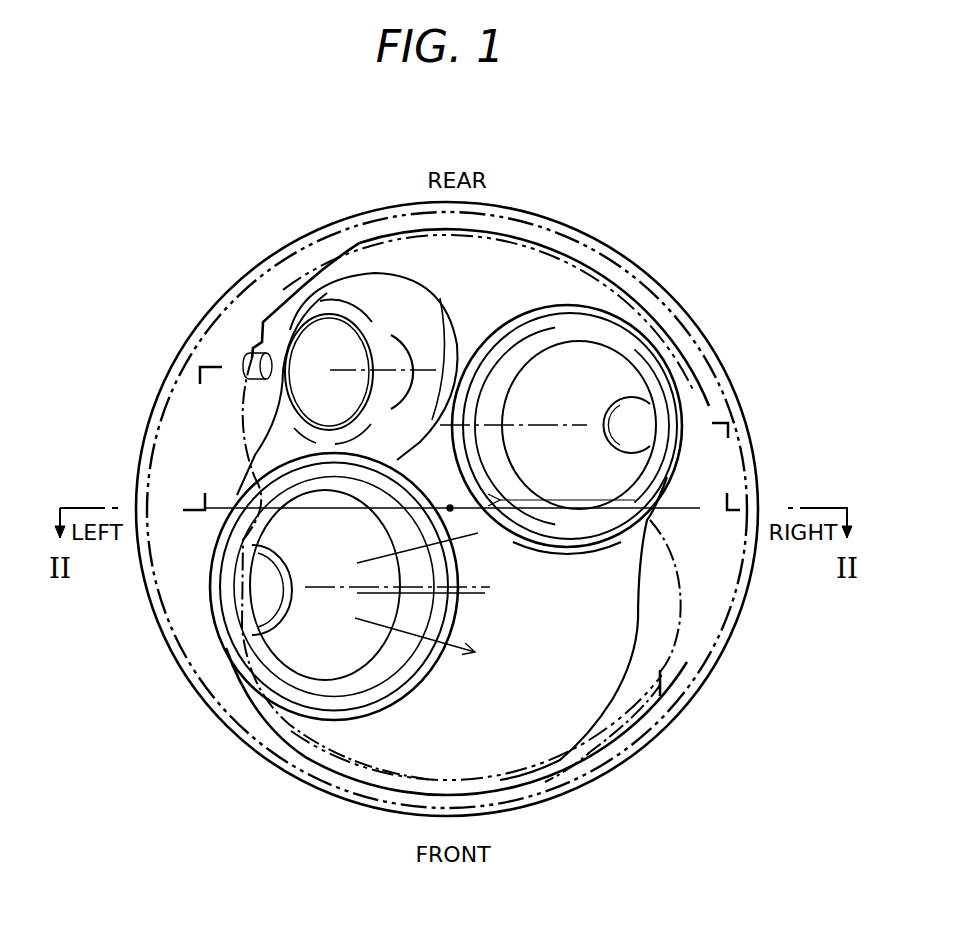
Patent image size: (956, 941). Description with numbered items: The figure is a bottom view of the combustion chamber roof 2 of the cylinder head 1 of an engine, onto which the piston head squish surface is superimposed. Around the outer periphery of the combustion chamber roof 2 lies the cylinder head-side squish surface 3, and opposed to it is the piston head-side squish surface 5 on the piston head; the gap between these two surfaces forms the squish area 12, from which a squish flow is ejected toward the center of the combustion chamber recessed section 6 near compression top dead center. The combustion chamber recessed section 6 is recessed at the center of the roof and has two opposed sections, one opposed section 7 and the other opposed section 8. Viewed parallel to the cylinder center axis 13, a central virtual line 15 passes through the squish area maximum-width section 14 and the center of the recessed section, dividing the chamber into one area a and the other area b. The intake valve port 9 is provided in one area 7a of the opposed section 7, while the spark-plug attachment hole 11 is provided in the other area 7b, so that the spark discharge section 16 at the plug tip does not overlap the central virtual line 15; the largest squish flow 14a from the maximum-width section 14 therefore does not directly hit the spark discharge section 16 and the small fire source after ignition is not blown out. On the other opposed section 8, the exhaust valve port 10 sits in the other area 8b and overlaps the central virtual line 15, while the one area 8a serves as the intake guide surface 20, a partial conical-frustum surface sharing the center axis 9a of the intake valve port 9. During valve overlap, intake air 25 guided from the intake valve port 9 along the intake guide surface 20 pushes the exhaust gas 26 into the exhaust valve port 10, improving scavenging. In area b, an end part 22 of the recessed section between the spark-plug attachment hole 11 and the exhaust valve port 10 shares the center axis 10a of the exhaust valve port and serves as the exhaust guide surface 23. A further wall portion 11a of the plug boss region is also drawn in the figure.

The cylinder head 1 is at (650, 243).
The combustion chamber roof 2 is at (591, 250).
The cylinder head-side squish surface 3 is at (682, 338).
The piston head-side squish surface 5 is at (695, 375).
The combustion chamber recessed section 6 is at (549, 270).
The one opposed section 7 is at (272, 455).
The one area of the one opposed section 7a is at (248, 556).
The other area of the one opposed section 7b is at (283, 440).
The other opposed section 8 is at (686, 392).
The one area of the other opposed section 8a is at (676, 708).
The other area of the other opposed section 8b is at (678, 474).
The intake valve port 9 is at (232, 667).
The center axis 9a is at (493, 590).
The exhaust valve port 10 is at (672, 440).
The center axis 10a is at (540, 424).
The spark-plug attachment hole 11 is at (302, 332).
The boss wall 11a is at (425, 372).
The squish area 12 is at (704, 610).
The cylinder center axis 13 is at (449, 504).
The squish area maximum-width section 14 is at (737, 497).
The largest squish flow 14a is at (574, 502).
The central virtual line 15 is at (678, 520).
The spark discharge section 16 is at (250, 360).
The intake guide surface 20 is at (620, 657).
The end part 22 is at (568, 269).
The exhaust guide surface 23 is at (492, 257).
The intake air 25 is at (352, 620).
The exhaust gas 26 is at (535, 344).
The one area a is at (634, 691).
The other area b is at (669, 327).